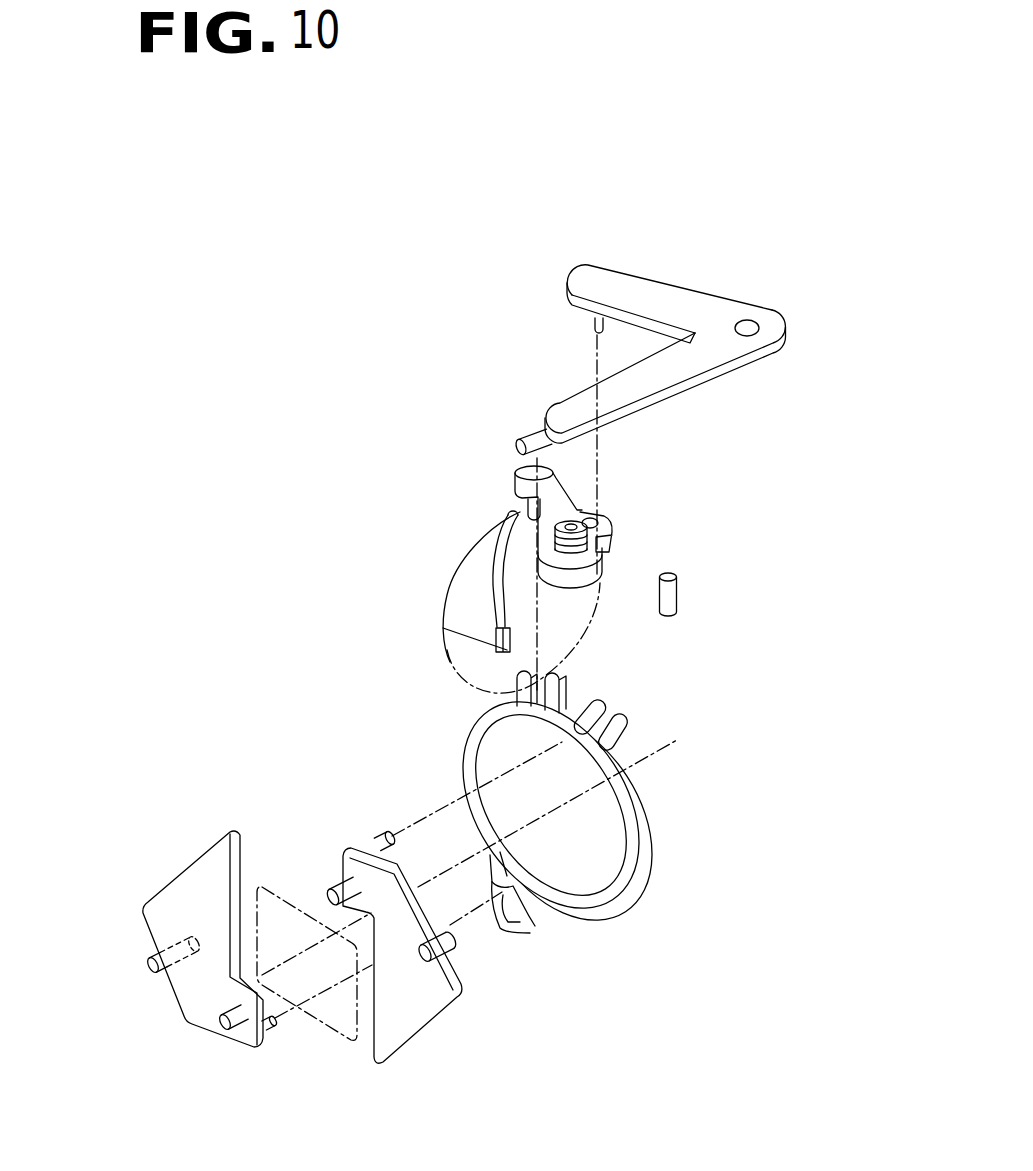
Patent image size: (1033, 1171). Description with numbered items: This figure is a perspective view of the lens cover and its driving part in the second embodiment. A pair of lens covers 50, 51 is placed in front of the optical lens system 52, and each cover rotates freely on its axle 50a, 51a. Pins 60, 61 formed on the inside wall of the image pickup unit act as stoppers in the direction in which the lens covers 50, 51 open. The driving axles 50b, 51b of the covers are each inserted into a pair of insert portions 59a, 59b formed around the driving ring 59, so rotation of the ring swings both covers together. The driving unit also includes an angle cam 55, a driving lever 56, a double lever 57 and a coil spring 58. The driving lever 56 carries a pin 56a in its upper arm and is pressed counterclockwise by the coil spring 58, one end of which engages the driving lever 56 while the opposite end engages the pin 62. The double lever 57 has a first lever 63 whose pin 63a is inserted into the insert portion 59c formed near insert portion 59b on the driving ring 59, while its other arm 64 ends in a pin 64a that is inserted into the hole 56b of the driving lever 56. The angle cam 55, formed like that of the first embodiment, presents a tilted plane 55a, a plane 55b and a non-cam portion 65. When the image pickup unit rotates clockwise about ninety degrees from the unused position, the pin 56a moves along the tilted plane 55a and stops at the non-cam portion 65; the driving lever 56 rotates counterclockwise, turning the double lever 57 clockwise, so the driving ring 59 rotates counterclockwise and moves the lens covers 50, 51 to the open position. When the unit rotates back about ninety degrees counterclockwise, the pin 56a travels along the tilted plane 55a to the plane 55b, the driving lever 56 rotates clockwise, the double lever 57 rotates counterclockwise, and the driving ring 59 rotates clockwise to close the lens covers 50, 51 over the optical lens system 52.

The lens cover 50 is at (205, 947).
The axle 50a is at (233, 1027).
The driving axle 50b is at (268, 1027).
The lens cover 51 is at (410, 903).
The axle 51a is at (333, 890).
The driving axle 51b is at (382, 835).
The optical lens system 52 is at (343, 1040).
The angle cam 55 is at (440, 597).
The tilted plane 55a is at (508, 551).
The plane 55b is at (508, 633).
The driving lever 56 is at (579, 567).
The pin 56a is at (523, 510).
The hole 56b is at (600, 525).
The double lever 57 is at (627, 388).
The coil spring 58 is at (640, 573).
The driving ring 59 is at (576, 794).
The insert portion 59a is at (530, 933).
The insert portion 59b is at (605, 715).
The insert portion 59c is at (542, 677).
The pin 60 is at (150, 960).
The pin 61 is at (455, 942).
The pin 62 is at (577, 557).
The first lever 63 is at (675, 375).
The pin 63a is at (527, 433).
The upper arm of V-shaped lever 64 is at (627, 283).
The pin 64a is at (592, 325).
The non-cam portion 65 is at (463, 690).